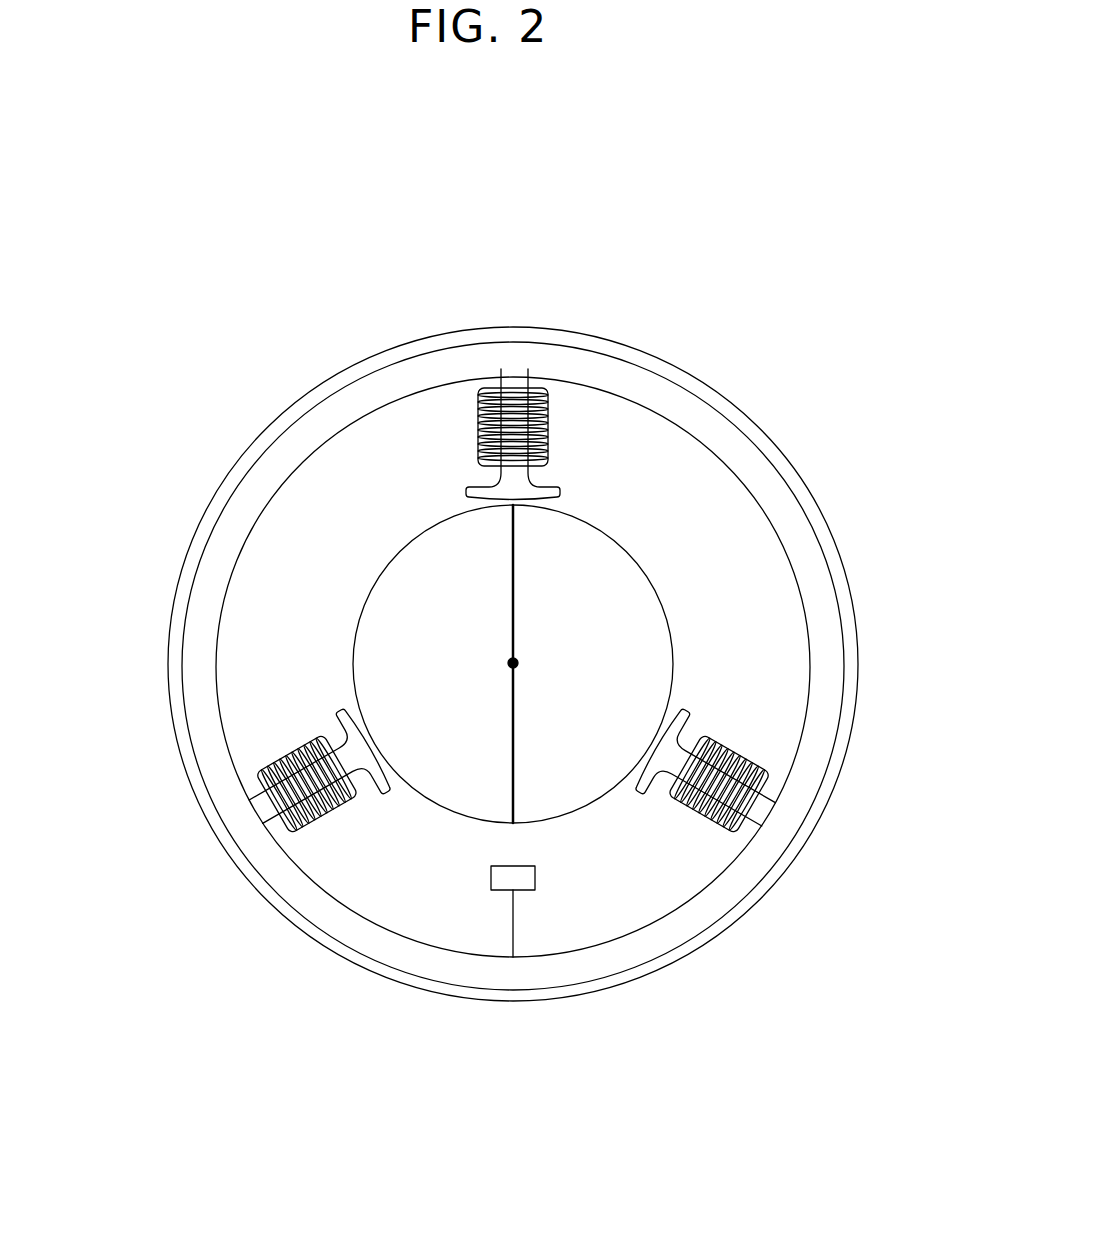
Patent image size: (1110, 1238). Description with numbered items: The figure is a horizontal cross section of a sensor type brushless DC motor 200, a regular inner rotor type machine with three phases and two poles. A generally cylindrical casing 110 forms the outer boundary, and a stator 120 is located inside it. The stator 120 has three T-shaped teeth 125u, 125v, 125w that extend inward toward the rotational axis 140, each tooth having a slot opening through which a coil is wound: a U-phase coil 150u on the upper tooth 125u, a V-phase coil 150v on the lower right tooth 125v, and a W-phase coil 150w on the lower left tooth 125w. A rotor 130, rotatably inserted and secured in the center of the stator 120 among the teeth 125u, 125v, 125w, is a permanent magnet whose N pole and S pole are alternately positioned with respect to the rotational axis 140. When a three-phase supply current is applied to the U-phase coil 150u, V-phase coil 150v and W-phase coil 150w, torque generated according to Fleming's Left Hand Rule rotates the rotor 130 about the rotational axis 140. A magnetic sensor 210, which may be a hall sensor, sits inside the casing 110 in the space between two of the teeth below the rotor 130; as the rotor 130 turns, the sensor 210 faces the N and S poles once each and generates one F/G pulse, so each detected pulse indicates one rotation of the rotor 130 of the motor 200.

The sensor type brushless DC motor 200 is at (510, 565).
The casing 110 is at (513, 714).
The stator 120 is at (513, 658).
The rotor 130 is at (422, 616).
The rotational axis 140 is at (716, 601).
The U-phase tooth 125u is at (441, 398).
The V-phase tooth 125v is at (783, 778).
The W-phase tooth 125w is at (233, 780).
The U-phase coil 150u is at (495, 325).
The V-phase coil 150v is at (810, 816).
The W-phase coil 150w is at (213, 838).
The magnetic sensor 210 is at (441, 959).